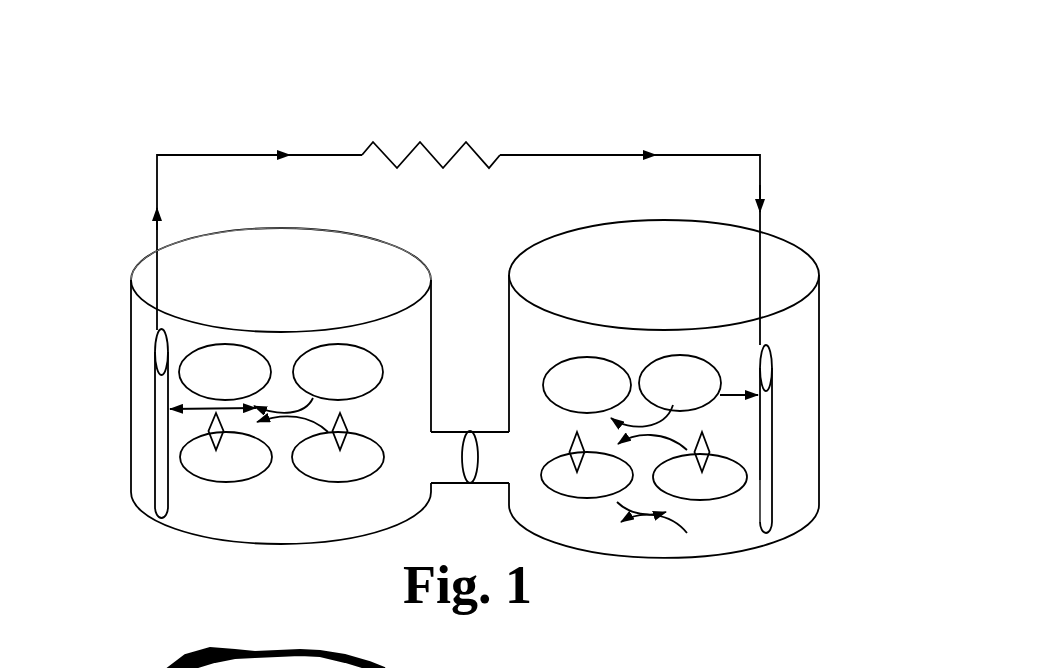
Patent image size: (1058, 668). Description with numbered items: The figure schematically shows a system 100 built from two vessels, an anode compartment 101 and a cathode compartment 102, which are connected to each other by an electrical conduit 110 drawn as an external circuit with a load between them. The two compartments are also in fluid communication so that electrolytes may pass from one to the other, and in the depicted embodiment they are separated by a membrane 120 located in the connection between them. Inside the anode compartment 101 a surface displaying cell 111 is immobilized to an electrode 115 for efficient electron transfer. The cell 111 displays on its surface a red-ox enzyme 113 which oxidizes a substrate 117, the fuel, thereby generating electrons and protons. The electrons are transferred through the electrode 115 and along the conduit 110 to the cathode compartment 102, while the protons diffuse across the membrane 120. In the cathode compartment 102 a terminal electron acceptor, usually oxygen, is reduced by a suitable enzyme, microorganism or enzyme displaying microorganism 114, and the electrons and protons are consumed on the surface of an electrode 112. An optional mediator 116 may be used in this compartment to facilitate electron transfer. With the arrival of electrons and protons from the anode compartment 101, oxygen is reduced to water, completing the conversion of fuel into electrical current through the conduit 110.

The system 100 is at (624, 134).
The anode compartment 101 is at (135, 347).
The cathode compartment 102 is at (817, 382).
The electrical conduit 110 is at (533, 155).
The surface displaying cell 111 is at (217, 477).
The electrode 112 is at (772, 497).
The red-ox enzyme 113 is at (203, 430).
The enzyme displaying microorganism 114 is at (713, 498).
The electrode 115 is at (153, 402).
The mediator 116 is at (697, 357).
The substrate 117 is at (228, 228).
The membrane 120 is at (477, 468).